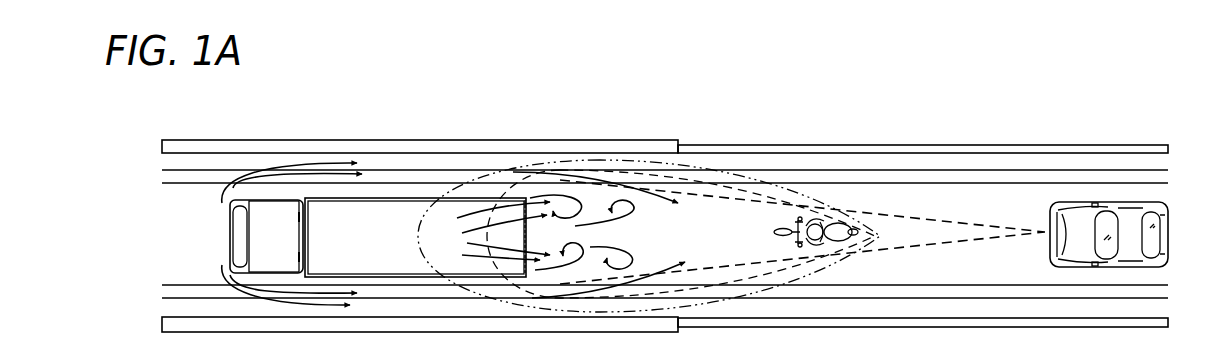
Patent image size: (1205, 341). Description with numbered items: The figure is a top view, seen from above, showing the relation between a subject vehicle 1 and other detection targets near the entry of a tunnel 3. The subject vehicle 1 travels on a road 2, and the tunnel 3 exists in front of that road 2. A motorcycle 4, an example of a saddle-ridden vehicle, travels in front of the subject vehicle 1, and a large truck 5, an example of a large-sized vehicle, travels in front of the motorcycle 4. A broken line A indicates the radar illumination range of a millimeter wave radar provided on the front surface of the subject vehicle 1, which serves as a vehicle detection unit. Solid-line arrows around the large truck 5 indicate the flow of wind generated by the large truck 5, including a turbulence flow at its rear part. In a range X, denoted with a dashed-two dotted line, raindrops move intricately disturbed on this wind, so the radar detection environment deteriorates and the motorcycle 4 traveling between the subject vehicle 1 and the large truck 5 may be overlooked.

The subject vehicle 1 is at (1052, 212).
The road 2 is at (965, 145).
The tunnel 3 is at (604, 140).
The motorcycle 4 is at (848, 213).
The large truck 5 is at (230, 230).
The broken line (radar illumination range) A is at (948, 247).
The range (of disturbed raindrops) X is at (868, 265).